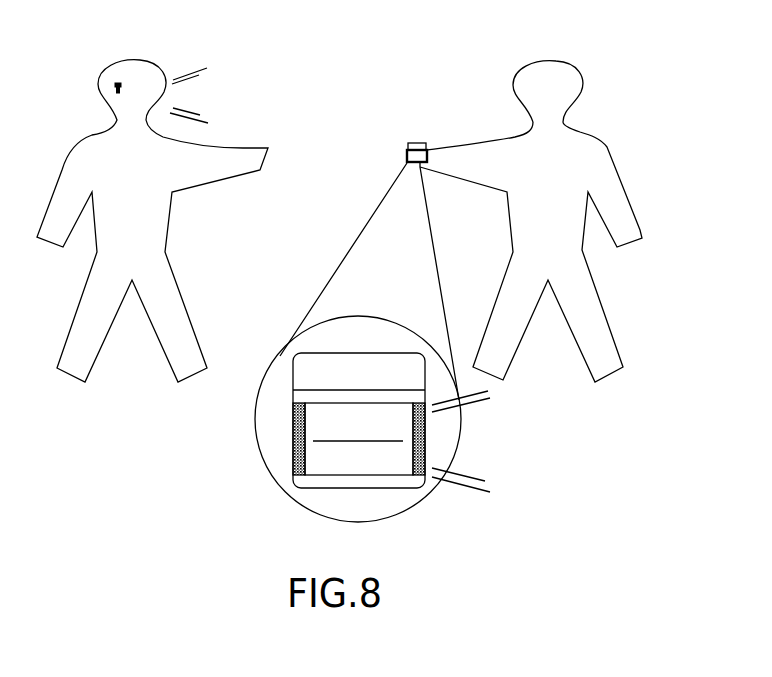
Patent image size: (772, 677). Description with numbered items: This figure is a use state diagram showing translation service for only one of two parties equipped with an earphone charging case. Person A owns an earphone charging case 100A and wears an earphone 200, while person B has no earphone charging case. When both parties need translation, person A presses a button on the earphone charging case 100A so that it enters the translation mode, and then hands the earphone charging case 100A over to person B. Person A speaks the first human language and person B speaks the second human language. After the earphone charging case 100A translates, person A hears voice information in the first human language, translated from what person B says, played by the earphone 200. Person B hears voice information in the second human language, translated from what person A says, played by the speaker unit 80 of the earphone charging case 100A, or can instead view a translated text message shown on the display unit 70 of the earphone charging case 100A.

The person A is at (92, 135).
The person B is at (592, 137).
The earphone 200 is at (117, 85).
The earphone charging case 100A is at (408, 152).
The display unit 70 is at (315, 425).
The speaker unit 80 is at (422, 475).